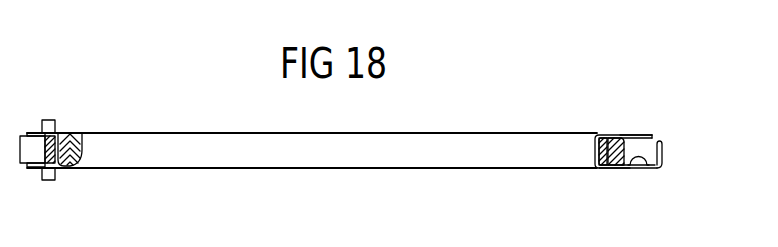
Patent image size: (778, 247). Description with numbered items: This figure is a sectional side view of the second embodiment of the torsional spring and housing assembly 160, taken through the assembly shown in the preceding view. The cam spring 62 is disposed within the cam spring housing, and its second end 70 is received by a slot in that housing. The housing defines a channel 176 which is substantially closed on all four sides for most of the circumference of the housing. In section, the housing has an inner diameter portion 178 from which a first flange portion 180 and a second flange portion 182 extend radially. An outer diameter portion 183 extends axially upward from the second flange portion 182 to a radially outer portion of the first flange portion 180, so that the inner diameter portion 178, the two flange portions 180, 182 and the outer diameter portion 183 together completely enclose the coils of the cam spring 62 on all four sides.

The torsional spring and housing assembly 160 is at (486, 114).
The second end of cam spring 70 is at (78, 134).
The inner diameter portion 178 is at (596, 135).
The cam spring 62 is at (623, 138).
The first flange portion 180 is at (652, 134).
The outer diameter portion 183 is at (663, 152).
The channel 176 is at (648, 168).
The second flange portion 182 is at (600, 171).